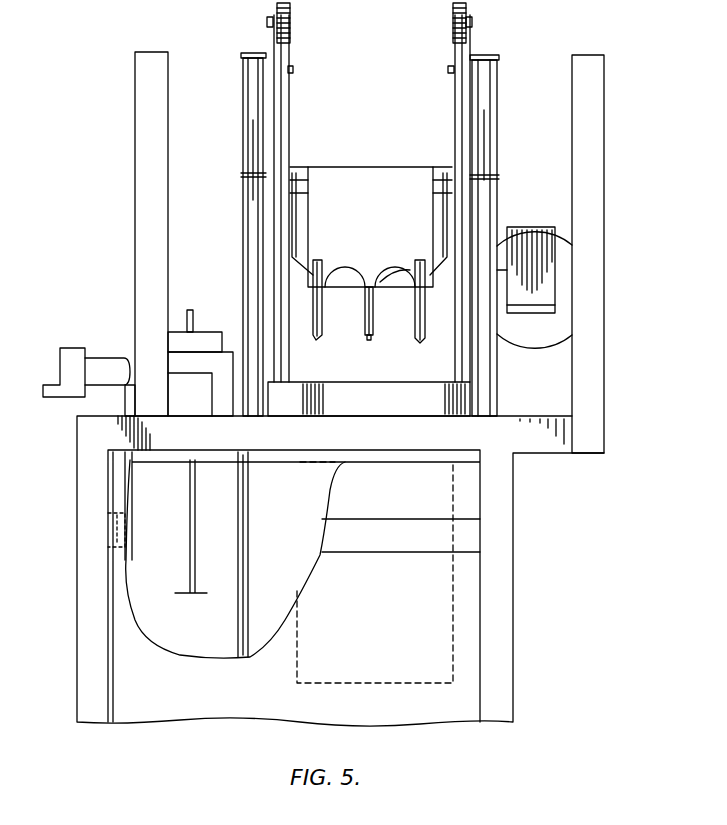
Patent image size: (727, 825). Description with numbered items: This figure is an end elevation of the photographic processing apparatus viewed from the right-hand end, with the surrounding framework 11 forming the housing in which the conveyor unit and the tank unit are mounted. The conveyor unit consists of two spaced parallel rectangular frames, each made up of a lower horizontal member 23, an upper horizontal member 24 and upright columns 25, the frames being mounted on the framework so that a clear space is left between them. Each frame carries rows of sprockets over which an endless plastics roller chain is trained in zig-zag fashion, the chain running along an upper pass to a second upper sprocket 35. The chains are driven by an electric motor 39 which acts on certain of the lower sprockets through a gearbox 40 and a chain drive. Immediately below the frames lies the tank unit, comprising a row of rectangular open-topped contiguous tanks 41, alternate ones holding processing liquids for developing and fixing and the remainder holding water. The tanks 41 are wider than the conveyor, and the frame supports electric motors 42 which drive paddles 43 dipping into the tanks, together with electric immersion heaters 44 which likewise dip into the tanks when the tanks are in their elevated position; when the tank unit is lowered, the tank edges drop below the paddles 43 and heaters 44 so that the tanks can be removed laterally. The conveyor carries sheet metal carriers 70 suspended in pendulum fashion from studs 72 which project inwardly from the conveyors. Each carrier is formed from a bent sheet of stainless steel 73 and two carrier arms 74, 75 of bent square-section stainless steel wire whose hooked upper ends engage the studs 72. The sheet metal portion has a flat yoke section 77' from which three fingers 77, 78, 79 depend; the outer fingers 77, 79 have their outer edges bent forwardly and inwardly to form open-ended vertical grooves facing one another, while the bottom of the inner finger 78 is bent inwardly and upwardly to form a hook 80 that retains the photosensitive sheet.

The housing frame 11 is at (598, 263).
The lower horizontal member 23 is at (496, 418).
The upper horizontal member 24 is at (497, 178).
The column 25 is at (486, 128).
The second upper sprocket 35 is at (453, 35).
The electric motor 39 is at (548, 324).
The gearbox 40 is at (548, 286).
The tank 41 is at (157, 634).
The electric motor 42 is at (186, 404).
The paddle 43 is at (188, 592).
The electric immersion heater 44 is at (240, 565).
The sheet metal carrier 70 is at (342, 262).
The stud 72 is at (292, 70).
The bent sheet of stainless steel 73 is at (366, 270).
The carrier arm 74 is at (292, 150).
The carrier arm 75 is at (450, 152).
The outer finger 77 is at (307, 313).
The flat yoke section 77' is at (400, 256).
The inner finger 78 is at (364, 325).
The outer finger 79 is at (422, 338).
The hook 80 is at (371, 338).